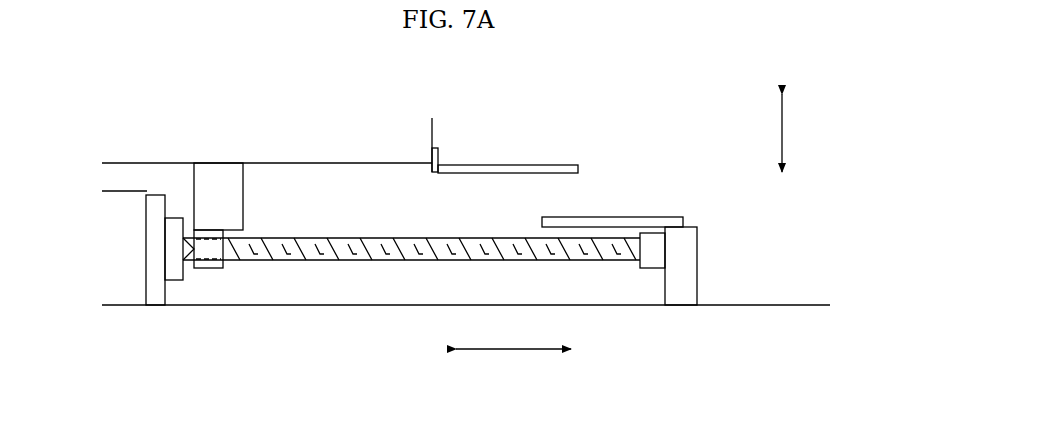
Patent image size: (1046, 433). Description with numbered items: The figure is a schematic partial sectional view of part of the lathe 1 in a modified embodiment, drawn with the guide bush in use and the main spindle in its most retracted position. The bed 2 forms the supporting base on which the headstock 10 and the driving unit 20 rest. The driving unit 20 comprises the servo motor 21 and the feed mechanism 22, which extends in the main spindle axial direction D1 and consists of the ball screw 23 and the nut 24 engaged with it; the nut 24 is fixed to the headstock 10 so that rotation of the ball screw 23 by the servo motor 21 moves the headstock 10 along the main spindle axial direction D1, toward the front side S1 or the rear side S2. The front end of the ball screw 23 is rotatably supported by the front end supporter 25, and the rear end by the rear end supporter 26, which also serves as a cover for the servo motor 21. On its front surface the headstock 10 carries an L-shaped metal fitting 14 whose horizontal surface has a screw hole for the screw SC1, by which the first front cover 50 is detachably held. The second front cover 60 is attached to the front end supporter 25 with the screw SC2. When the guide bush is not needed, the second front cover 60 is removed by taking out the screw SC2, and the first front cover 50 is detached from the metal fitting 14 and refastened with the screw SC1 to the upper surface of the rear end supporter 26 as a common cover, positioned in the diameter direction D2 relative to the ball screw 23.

The lathe 1 is at (148, 102).
The bed 2 is at (740, 305).
The headstock 10 is at (408, 147).
The L-shaped metal fitting 14 is at (438, 150).
The driving unit 20 is at (125, 318).
The servo motor 21 is at (120, 191).
The feed mechanism 22 is at (424, 296).
The ball screw 23 is at (330, 238).
The nut 24 is at (208, 268).
The front end supporter 25 is at (700, 245).
The rear end supporter 26 is at (152, 287).
The first front cover 50 is at (577, 165).
The second front cover 60 is at (632, 217).
The screw SC1 is at (444, 161).
The screw SC2 is at (674, 216).
The front side S1 is at (601, 349).
The rear side S2 is at (418, 349).
The main spindle axial direction D1 is at (513, 370).
The diameter direction D2 is at (800, 133).